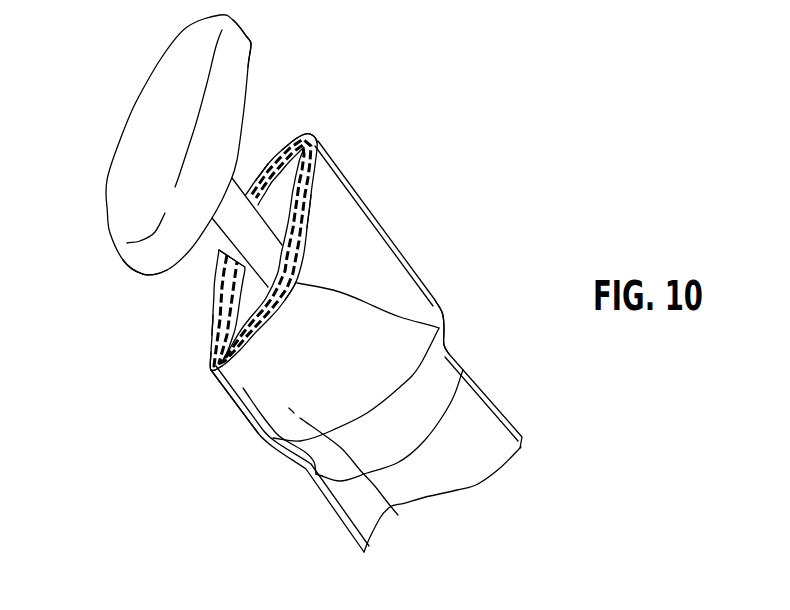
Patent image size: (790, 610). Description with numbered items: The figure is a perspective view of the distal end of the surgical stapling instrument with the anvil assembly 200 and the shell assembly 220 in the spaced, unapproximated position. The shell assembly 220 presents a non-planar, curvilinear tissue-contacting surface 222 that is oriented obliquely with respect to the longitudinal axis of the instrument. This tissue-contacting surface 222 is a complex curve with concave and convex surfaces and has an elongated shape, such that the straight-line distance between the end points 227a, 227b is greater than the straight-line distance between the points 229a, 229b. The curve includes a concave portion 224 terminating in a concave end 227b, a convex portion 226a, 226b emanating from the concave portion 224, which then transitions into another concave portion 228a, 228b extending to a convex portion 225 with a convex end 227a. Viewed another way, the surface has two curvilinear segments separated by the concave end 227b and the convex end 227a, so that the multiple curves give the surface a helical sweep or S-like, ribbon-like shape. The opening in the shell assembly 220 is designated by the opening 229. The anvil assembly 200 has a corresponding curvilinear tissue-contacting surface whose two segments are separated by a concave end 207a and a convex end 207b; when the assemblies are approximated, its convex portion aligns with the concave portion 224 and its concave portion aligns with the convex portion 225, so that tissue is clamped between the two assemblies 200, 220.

The anvil assembly 200 is at (137, 133).
The concave end 207a is at (143, 278).
The convex end 207b is at (251, 45).
The shell assembly 220 is at (350, 275).
The tissue-contacting surface 222 is at (300, 184).
The concave portion 224 is at (311, 134).
The convex portion 225 is at (207, 371).
The convex portion 226a is at (307, 237).
The convex portion 226b is at (257, 170).
The convex end 227a is at (206, 368).
The concave end 227b is at (316, 138).
The concave portion 228a is at (273, 322).
The concave portion 228b is at (214, 323).
The opening 229 is at (237, 373).
The point 229a is at (440, 328).
The point 229b is at (215, 253).